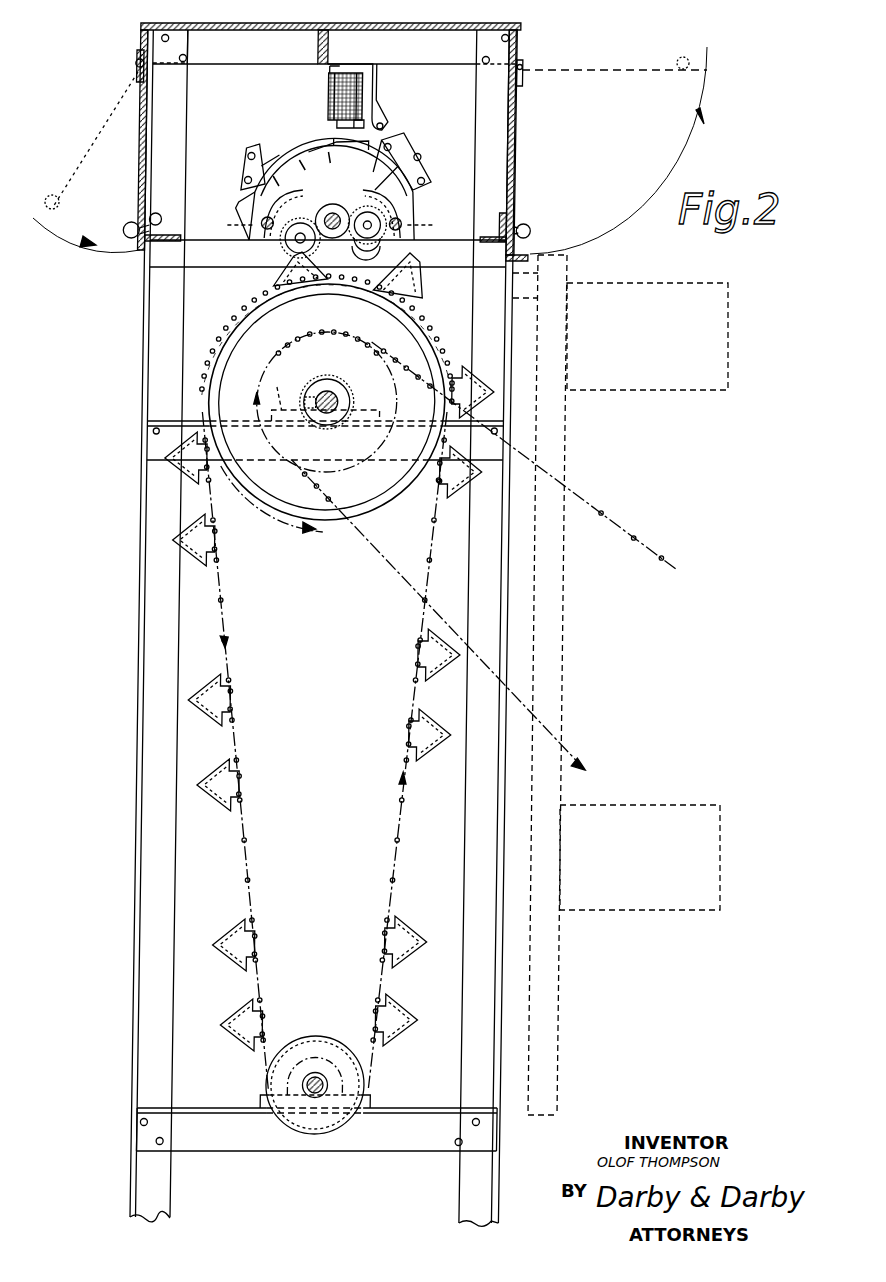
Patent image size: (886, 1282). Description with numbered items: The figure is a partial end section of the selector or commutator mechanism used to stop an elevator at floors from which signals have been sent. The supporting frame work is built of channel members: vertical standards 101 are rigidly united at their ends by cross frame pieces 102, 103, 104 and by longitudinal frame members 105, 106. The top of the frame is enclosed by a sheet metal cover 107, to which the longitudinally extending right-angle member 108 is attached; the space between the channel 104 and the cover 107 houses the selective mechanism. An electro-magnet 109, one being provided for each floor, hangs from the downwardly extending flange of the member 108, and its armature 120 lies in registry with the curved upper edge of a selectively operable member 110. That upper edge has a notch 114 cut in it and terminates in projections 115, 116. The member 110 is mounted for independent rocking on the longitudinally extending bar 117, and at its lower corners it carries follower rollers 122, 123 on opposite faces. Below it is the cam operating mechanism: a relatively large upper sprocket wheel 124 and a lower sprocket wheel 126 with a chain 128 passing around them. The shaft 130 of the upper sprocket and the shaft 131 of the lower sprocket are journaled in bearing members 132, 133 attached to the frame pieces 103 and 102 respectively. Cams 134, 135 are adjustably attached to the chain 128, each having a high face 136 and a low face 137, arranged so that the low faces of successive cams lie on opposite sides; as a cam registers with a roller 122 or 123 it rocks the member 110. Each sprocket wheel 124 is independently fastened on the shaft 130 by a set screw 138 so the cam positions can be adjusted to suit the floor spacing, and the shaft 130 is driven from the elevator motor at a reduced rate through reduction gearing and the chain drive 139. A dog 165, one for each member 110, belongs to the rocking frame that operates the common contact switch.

The vertical standards 101 is at (142, 648).
The cross frame piece 102 is at (240, 1140).
The cross frame piece 103 is at (155, 430).
The cross frame piece 104 is at (158, 257).
The longitudinal frame member 105 is at (514, 229).
The longitudinal frame member 106 is at (150, 216).
The sheet metal cover 107 is at (428, 26).
The right-angle member 108 is at (318, 40).
The electro-magnet 109 is at (327, 97).
The selectively operable member 110 is at (332, 189).
The notch 114 is at (306, 138).
The projection 115 is at (393, 172).
The projection 116 is at (254, 196).
The bar 117 is at (330, 208).
The armature 120 is at (338, 134).
The follower roller 122 is at (283, 243).
The follower roller 123 is at (376, 240).
The upper sprocket wheel 124 is at (226, 322).
The lower sprocket wheel 126 is at (317, 1038).
The chain 128 is at (405, 781).
The shaft 130 is at (333, 393).
The shaft 131 is at (314, 1094).
The bearing member 132 is at (292, 389).
The bearing member 133 is at (271, 1096).
The cam 134 is at (294, 270).
The cam 135 is at (409, 288).
The high face 136 is at (455, 667).
The low face 137 is at (440, 650).
The set screw 138 is at (300, 423).
The chain drive 139 is at (524, 456).
The dog 165 is at (244, 169).